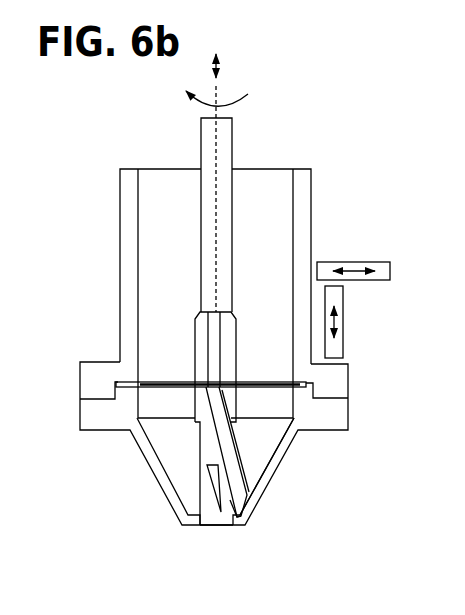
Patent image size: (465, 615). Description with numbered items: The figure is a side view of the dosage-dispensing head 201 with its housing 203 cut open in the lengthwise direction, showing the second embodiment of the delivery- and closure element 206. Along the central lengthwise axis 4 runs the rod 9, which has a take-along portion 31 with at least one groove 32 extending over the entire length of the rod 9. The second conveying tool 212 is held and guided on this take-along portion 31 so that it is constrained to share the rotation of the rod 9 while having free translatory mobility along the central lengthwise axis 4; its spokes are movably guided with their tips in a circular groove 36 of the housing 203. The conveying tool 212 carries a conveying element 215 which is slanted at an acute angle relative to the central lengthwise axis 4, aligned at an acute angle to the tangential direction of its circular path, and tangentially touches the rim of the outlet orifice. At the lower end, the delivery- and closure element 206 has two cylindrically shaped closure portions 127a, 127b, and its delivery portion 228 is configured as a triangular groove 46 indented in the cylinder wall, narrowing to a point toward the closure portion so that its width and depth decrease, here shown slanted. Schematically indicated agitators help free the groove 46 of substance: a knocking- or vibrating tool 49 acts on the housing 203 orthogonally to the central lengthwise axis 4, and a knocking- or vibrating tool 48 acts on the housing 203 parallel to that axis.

The central lengthwise axis 4 is at (215, 168).
The rod 9 is at (203, 240).
The dosage-dispensing head 201 is at (302, 152).
The housing 203 is at (90, 435).
The delivery- and closure element 206 is at (192, 488).
The circular groove 36 is at (128, 382).
The take-along portion 31 is at (200, 353).
The groove 32 is at (213, 332).
The knocking- or vibrating tool 49 is at (355, 280).
The knocking- or vibrating tool 48 is at (338, 345).
The closure portion 127b is at (199, 448).
The delivery portion 228 is at (207, 468).
The triangular groove 46 is at (203, 522).
The second conveying tool 212 is at (255, 440).
The conveying element 215 is at (227, 457).
The closure portion 127a is at (220, 520).